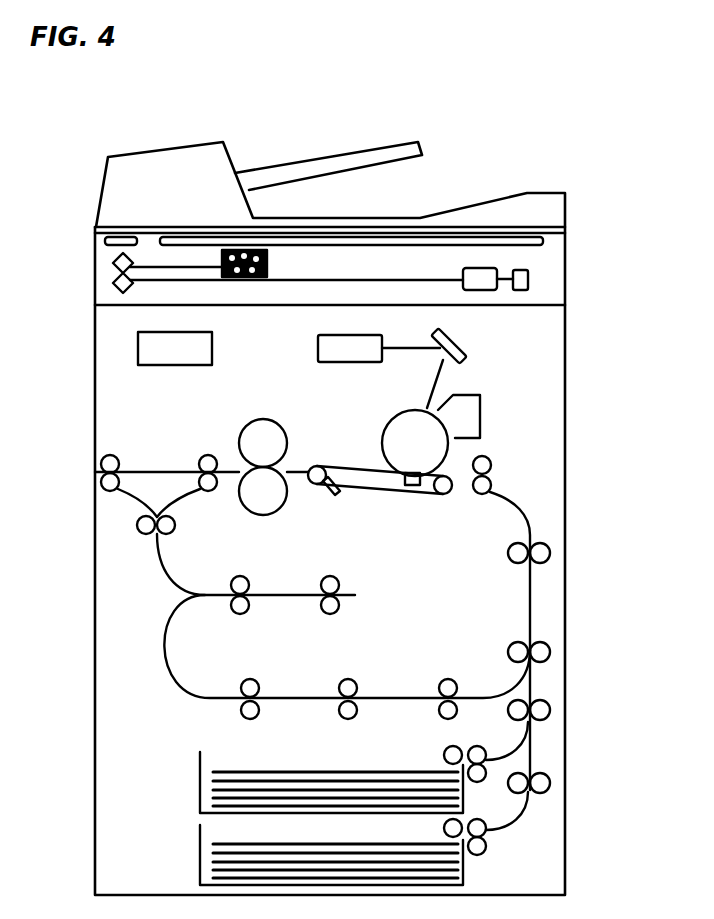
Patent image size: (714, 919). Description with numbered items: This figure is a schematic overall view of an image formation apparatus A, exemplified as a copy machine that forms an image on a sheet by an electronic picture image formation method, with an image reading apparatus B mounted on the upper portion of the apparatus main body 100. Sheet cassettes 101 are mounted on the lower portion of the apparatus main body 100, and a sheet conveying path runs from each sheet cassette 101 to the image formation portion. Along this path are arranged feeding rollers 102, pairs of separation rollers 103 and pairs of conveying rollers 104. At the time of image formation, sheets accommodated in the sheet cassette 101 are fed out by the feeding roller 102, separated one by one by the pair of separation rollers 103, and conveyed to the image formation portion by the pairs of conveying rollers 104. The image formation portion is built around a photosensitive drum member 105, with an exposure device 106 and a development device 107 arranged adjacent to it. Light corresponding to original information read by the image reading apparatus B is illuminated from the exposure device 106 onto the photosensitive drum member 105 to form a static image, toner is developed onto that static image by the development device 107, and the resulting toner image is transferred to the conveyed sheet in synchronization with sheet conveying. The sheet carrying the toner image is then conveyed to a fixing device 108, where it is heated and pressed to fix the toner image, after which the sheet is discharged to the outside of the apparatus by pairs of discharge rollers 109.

The apparatus main body 100 is at (95, 372).
The sheet cassette 101 is at (200, 783).
The feeding roller 102 is at (444, 755).
The pair of separation rollers 103 is at (481, 736).
The pair of conveying rollers 104 is at (488, 463).
The photosensitive drum member 105 is at (393, 426).
The exposure device 106 is at (318, 348).
The development device 107 is at (468, 417).
The fixing device 108 is at (252, 432).
The pair of discharge rollers 109 is at (113, 456).
The image formation apparatus A is at (573, 402).
The image reading apparatus B is at (521, 192).